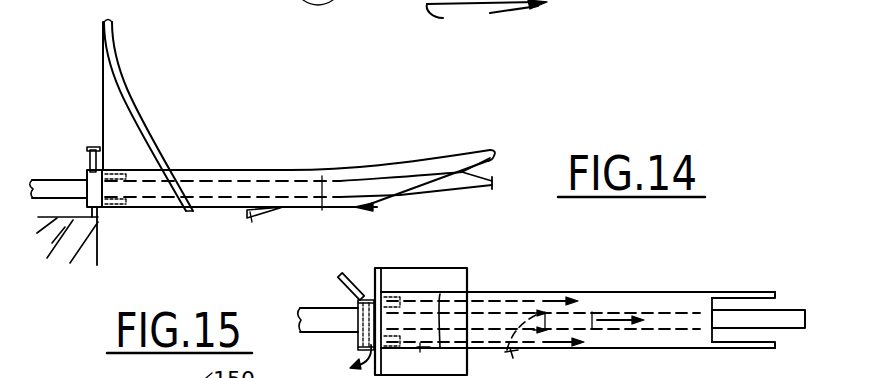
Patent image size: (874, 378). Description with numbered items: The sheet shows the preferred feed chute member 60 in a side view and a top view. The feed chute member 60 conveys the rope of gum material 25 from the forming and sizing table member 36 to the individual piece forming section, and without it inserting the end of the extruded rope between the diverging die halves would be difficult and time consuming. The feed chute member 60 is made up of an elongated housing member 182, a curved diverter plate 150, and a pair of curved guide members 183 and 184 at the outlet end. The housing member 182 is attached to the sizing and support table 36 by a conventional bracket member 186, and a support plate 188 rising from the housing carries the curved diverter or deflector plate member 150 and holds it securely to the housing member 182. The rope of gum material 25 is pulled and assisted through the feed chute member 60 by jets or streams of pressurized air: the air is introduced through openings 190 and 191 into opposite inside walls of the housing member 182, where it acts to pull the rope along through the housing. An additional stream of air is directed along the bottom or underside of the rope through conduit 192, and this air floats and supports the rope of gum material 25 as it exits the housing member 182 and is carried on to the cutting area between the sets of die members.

In FIG. 14, the rope of gum material 25 is at (53, 180).
In FIG. 15, the rope of gum material 25 is at (322, 308).
In FIG. 14, the table member 36 is at (61, 257).
In FIG. 14, the feed chute member 60 is at (227, 207).
In FIG. 15, the feed chute member 60 is at (630, 282).
In FIG. 14, the curved diverter plate 150 is at (132, 102).
In FIG. 15, the curved diverter plate 150 is at (426, 273).
In FIG. 14, the elongated housing member 182 is at (255, 170).
In FIG. 15, the elongated housing member 182 is at (519, 292).
In FIG. 15, the curved guide member 183 is at (757, 292).
In FIG. 14, the curved guide member 184 is at (443, 158).
In FIG. 15, the curved guide member 184 is at (750, 349).
In FIG. 14, the bracket member 186 is at (100, 212).
In FIG. 14, the support plate 188 is at (107, 88).
In FIG. 14, the opening 190 is at (87, 151).
In FIG. 15, the opening 190 is at (343, 272).
In FIG. 15, the opening 191 is at (350, 357).
In FIG. 14, the conduit 192 is at (251, 216).
In FIG. 15, the conduit 192 is at (520, 357).